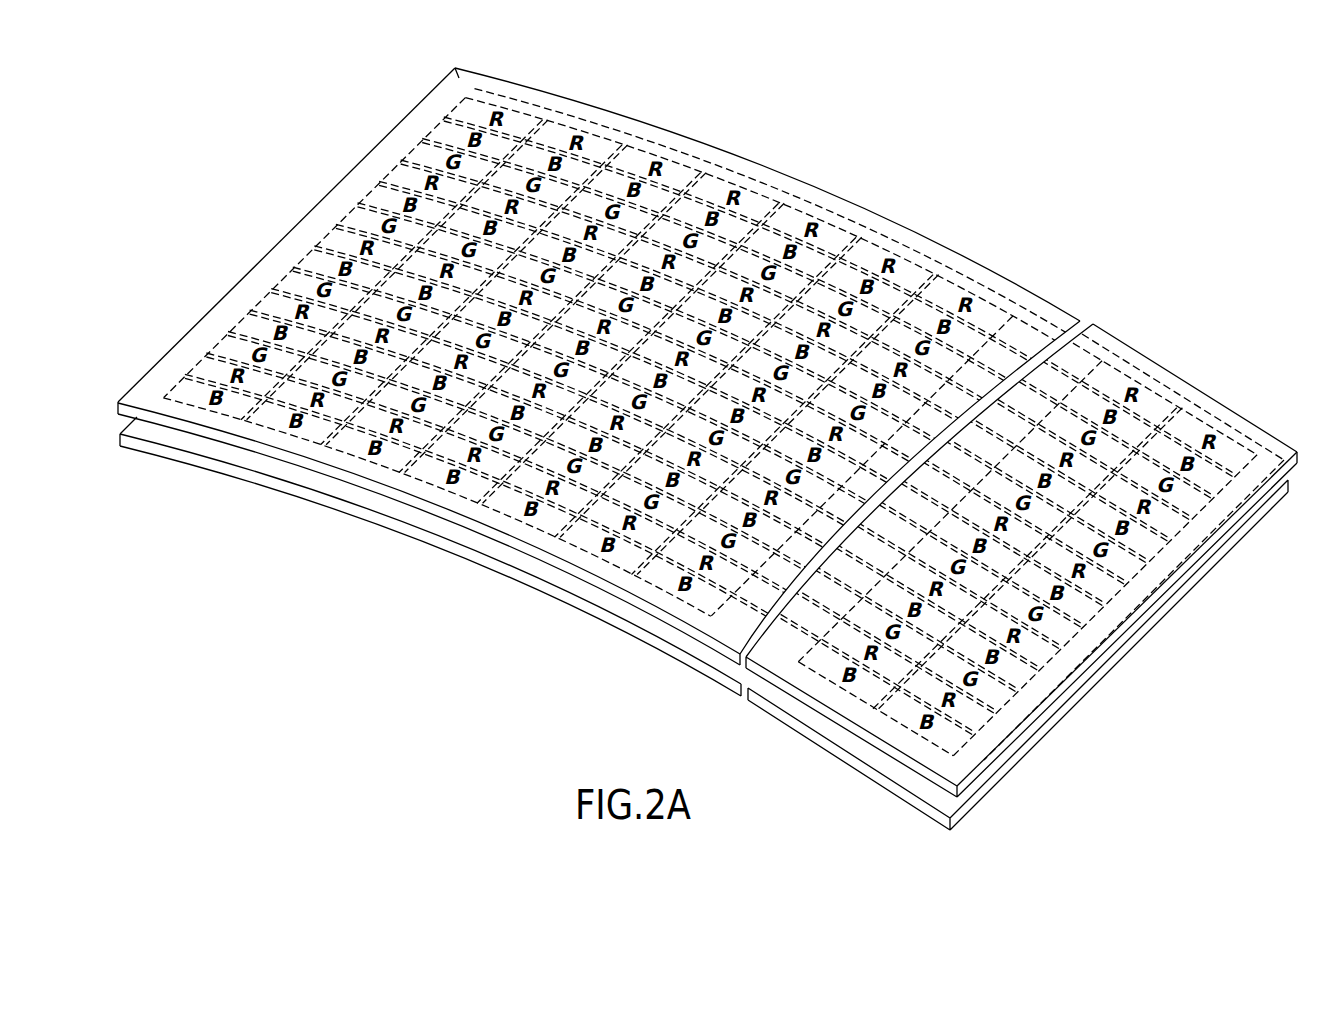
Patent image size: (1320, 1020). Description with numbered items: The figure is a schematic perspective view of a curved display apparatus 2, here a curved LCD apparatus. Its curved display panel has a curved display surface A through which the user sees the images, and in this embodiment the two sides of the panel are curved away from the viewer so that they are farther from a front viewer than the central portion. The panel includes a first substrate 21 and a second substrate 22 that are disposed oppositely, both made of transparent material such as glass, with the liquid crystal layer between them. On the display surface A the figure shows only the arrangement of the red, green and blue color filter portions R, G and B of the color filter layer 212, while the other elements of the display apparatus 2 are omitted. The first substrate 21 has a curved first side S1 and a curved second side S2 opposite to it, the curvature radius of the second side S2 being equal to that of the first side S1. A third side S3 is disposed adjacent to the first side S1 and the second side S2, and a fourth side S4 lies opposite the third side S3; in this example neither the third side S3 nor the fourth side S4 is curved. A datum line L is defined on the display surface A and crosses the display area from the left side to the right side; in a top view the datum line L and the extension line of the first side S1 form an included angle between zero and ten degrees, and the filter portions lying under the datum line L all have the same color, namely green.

The display apparatus 2 is at (703, 449).
The first substrate 21 is at (707, 432).
The second substrate 22 is at (181, 460).
The color filter layer 212 is at (1163, 407).
The display surface A is at (622, 142).
The first side S1 is at (425, 497).
The second side S2 is at (935, 242).
The third side S3 is at (353, 173).
The fourth side S4 is at (1098, 660).
The datum line L is at (1158, 590).